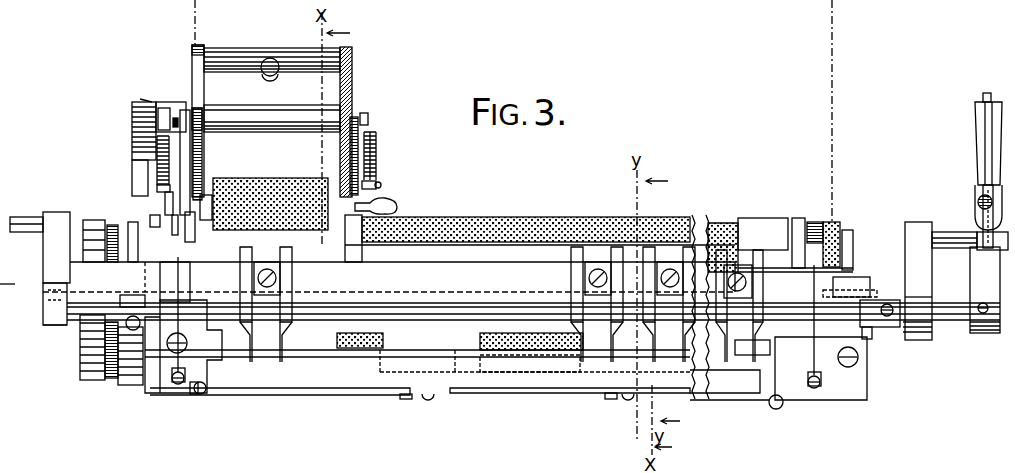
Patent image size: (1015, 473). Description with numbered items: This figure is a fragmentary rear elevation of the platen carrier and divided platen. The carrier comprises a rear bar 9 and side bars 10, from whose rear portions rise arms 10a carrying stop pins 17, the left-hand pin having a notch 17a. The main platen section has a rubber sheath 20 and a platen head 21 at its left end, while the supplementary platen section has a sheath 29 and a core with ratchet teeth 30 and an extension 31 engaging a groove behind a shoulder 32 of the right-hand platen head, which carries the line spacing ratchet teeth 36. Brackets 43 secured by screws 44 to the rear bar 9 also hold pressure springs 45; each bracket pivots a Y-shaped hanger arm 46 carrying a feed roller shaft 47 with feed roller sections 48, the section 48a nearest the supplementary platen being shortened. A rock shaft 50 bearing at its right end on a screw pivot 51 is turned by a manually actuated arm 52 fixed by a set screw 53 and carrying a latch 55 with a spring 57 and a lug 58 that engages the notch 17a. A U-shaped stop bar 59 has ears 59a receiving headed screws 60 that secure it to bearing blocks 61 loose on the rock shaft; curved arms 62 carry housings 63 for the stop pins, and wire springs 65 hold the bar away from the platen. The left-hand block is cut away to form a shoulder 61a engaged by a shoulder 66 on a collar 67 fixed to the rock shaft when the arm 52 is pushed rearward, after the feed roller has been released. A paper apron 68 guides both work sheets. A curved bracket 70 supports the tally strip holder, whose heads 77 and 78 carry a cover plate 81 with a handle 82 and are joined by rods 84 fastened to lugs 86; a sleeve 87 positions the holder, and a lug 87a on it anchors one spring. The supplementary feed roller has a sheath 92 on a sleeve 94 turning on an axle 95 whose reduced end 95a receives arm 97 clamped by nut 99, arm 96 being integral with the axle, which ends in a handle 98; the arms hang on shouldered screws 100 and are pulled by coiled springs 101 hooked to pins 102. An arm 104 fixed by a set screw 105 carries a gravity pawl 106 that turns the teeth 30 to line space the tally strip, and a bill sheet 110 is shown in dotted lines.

The rear bar 9 is at (465, 268).
The side bars 10 is at (47, 326).
The extensions or arms 10a is at (50, 212).
The stop pins 17 is at (22, 233).
The notch or cut-away 17a is at (960, 249).
The sheath 20 is at (463, 220).
The platen head 21 is at (851, 250).
The sheath 29 is at (175, 233).
The ratchet teeth 30 is at (132, 386).
The extension 31 is at (115, 379).
The shoulder 32 is at (108, 364).
The ratchet teeth 36 is at (92, 221).
The brackets 43 is at (280, 258).
The screws 44 is at (258, 277).
The feed roller pressure springs 45 is at (300, 306).
The Y-shaped hanger arm 46 is at (252, 343).
The feed roller shafts 47 is at (706, 320).
The feed roller sections 48 is at (515, 352).
The feed roller section 48a is at (385, 341).
The rock shaft 50 is at (77, 323).
The screw pivot 51 is at (43, 309).
The manually actuated arm 52 is at (978, 123).
The set screw 53 is at (989, 308).
The detent or latch 55 is at (986, 152).
The spring 57 is at (978, 203).
The engaging lug 58 is at (982, 220).
The stop frame or bar 59 is at (468, 391).
The ears 59a is at (515, 375).
The headed screws 60 is at (188, 345).
The bearing blocks 61 is at (170, 298).
The shoulder 61a is at (868, 331).
The curved arms 62 is at (410, 399).
The housings 63 is at (203, 394).
The wire springs 65 is at (180, 301).
The shoulder 66 is at (880, 300).
The collar 67 is at (894, 311).
The paper apron 68 is at (153, 394).
The supporting arm or bracket 70 is at (134, 174).
The right-hand head 77 is at (192, 63).
The left-hand head 78 is at (352, 62).
The cover plate 81 is at (235, 50).
The handle 82 is at (264, 75).
The rods or bars 84 is at (268, 131).
The lug 86 is at (204, 125).
The sleeve 87 is at (162, 122).
The lug 87a is at (158, 102).
The sheath 92 is at (270, 178).
The metal sleeve 94 is at (207, 205).
The axle or rod 95 is at (207, 192).
The reduced threaded end 95a is at (159, 229).
The arm 96 is at (377, 149).
The arm 97 is at (166, 195).
The handle 98 is at (397, 207).
The clamping nut 99 is at (189, 242).
The headed and shouldered screws 100 is at (196, 110).
The coiled springs 101 is at (157, 150).
The pins 102 is at (157, 188).
The arm 104 is at (122, 296).
The set screw 105 is at (133, 316).
The gravity pawl 106 is at (133, 222).
The bill sheet 110 is at (833, 112).